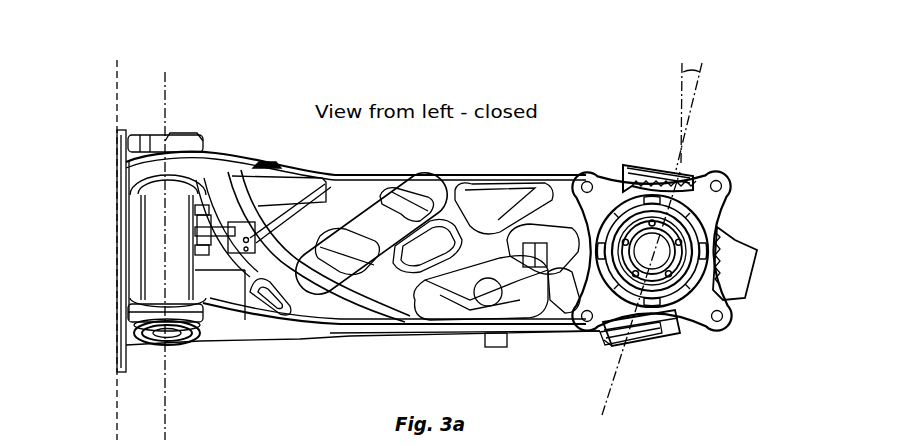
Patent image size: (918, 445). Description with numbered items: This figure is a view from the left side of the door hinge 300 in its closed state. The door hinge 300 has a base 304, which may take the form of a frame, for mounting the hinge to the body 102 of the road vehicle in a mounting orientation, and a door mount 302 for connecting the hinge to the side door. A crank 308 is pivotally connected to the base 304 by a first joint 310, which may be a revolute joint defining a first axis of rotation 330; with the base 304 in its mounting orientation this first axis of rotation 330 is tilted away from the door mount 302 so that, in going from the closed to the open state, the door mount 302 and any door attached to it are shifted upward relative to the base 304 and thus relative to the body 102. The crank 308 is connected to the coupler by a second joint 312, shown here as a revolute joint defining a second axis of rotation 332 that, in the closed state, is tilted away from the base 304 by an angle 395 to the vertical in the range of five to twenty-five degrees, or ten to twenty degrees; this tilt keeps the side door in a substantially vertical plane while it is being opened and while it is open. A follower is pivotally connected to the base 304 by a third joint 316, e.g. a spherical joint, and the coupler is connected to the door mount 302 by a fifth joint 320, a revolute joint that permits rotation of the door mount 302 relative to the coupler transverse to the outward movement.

The body 102 is at (118, 66).
The first axis of rotation 330 is at (166, 78).
The third joint 316 is at (265, 161).
The base 304 is at (117, 187).
The angle 395 is at (690, 70).
The fifth joint 320 is at (724, 255).
The door mount 302 is at (719, 335).
The second joint 312 is at (649, 354).
The second axis of rotation 332 is at (641, 293).
The door hinge 300 is at (519, 374).
The crank 308 is at (290, 350).
The first joint 310 is at (183, 350).